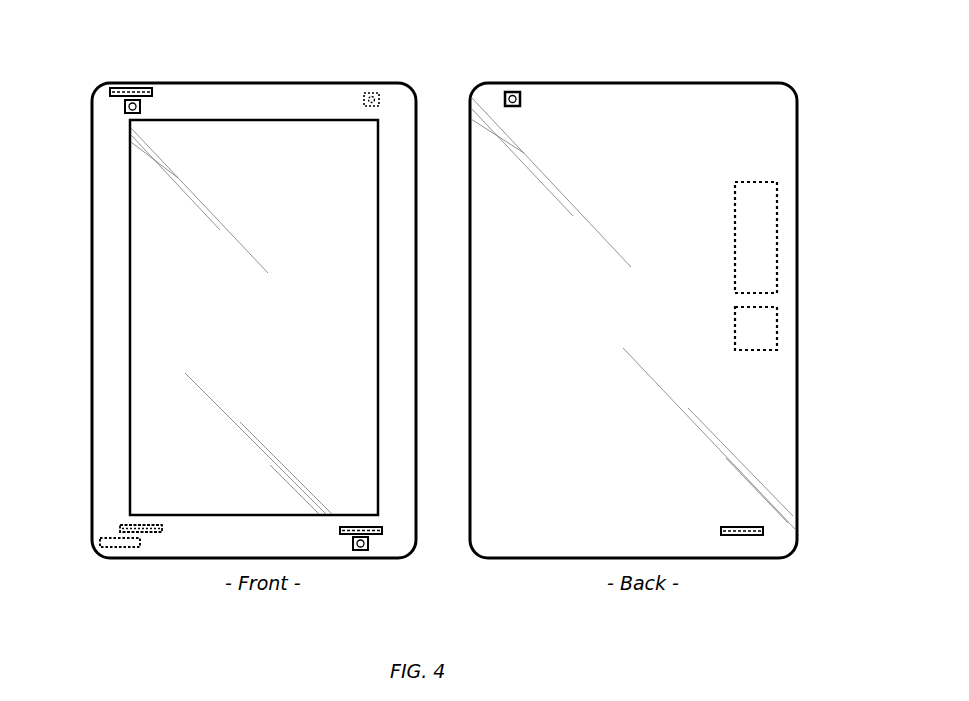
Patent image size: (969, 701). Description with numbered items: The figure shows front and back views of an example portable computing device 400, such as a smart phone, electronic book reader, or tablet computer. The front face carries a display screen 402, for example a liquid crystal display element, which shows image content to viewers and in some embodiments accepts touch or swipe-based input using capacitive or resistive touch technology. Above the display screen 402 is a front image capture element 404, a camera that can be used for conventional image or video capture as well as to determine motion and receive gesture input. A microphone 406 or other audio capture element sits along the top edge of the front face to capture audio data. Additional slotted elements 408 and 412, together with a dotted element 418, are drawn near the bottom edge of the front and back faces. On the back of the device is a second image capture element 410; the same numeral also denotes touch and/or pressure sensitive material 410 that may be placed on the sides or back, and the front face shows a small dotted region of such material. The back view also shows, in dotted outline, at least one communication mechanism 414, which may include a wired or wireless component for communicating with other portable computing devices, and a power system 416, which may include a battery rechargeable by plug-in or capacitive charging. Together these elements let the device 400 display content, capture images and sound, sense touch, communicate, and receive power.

The portable computing device 400 is at (823, 92).
The display screen 402 is at (129, 234).
The image capture element 404 is at (125, 107).
The microphone 406 is at (140, 88).
The speaker 408 is at (375, 534).
The image capture element 410 is at (368, 92).
The speaker / port 412 is at (140, 533).
The communication mechanism 414 is at (777, 255).
The power system 416 is at (777, 332).
The connector port 418 is at (118, 548).